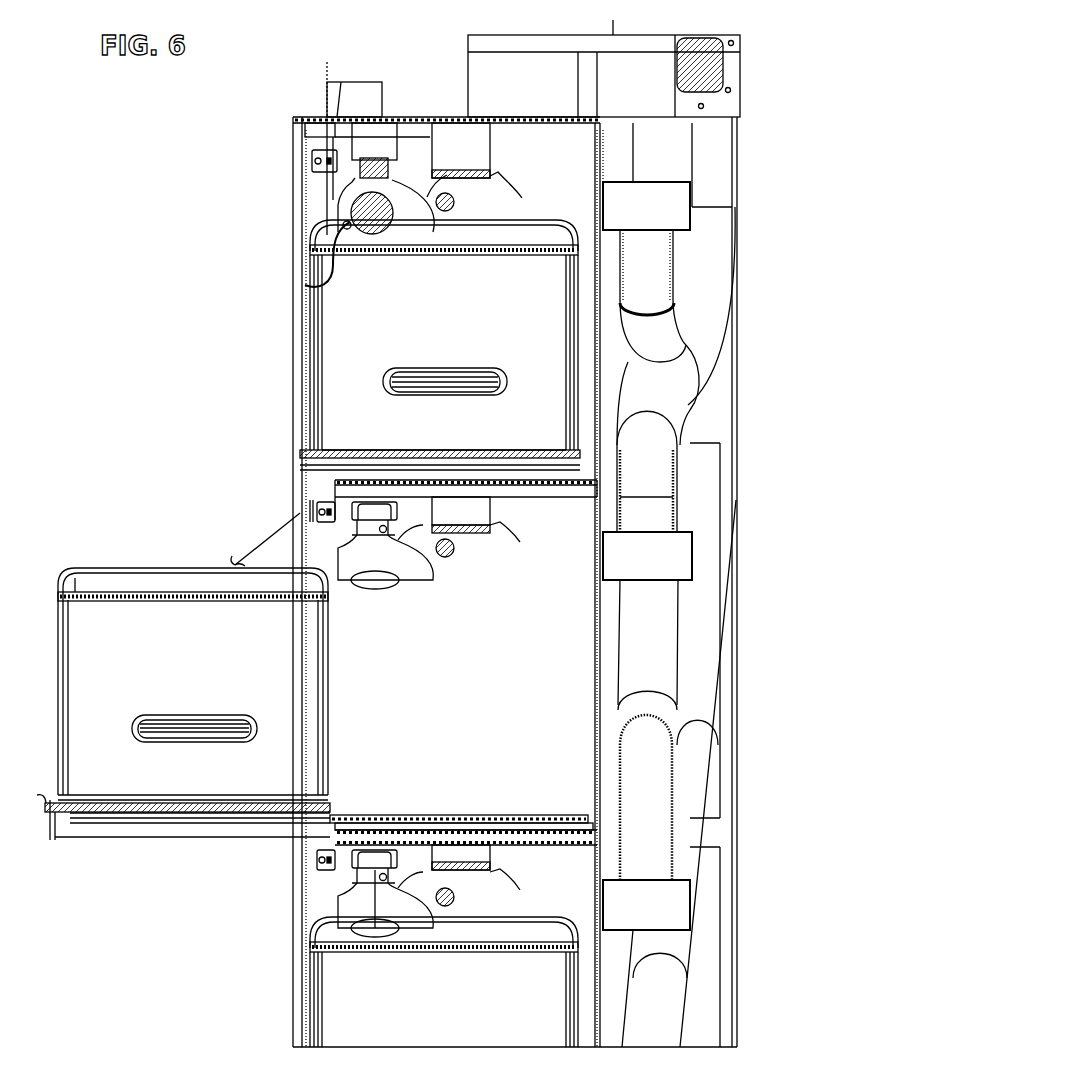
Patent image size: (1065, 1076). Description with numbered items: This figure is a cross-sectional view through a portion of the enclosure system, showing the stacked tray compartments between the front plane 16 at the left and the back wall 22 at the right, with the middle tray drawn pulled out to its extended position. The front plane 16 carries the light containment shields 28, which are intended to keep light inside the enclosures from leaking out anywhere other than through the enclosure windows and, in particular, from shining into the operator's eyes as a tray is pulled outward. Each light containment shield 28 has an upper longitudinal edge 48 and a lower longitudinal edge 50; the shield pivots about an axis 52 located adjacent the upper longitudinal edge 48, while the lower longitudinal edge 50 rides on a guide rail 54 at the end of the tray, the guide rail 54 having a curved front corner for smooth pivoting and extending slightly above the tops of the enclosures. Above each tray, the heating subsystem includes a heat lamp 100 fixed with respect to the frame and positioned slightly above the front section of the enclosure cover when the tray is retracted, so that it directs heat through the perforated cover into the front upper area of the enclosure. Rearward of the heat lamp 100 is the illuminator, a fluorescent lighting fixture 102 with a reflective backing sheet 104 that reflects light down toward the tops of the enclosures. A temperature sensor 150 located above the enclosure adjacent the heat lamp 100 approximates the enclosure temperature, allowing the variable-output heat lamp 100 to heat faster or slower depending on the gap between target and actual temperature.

The front plane 16 is at (292, 152).
The back wall 22 is at (738, 154).
The light containment shield 28 is at (257, 538).
The upper longitudinal edge 48 is at (312, 508).
The lower longitudinal edge 50 is at (237, 566).
The axis 52 is at (312, 505).
The guide rail 54 is at (141, 568).
The heat lamp 100 is at (412, 583).
The lighting fixture 102 is at (452, 556).
The reflective backing sheet 104 is at (475, 527).
The temperature sensor 150 is at (305, 285).